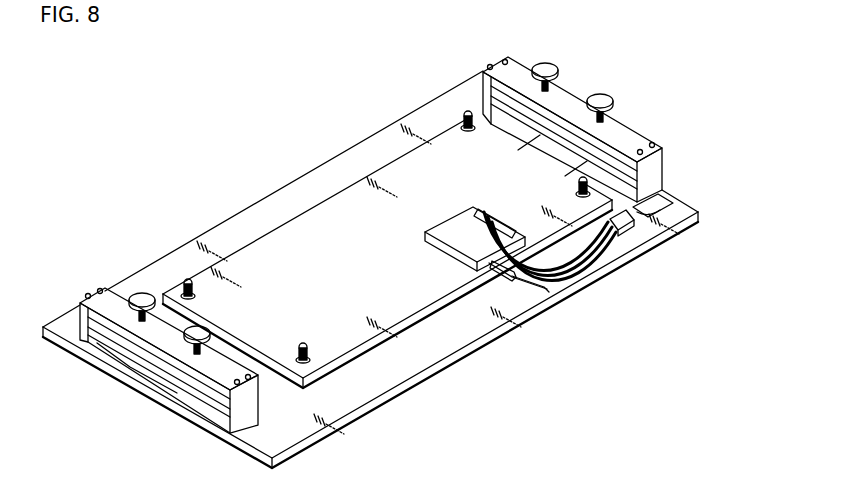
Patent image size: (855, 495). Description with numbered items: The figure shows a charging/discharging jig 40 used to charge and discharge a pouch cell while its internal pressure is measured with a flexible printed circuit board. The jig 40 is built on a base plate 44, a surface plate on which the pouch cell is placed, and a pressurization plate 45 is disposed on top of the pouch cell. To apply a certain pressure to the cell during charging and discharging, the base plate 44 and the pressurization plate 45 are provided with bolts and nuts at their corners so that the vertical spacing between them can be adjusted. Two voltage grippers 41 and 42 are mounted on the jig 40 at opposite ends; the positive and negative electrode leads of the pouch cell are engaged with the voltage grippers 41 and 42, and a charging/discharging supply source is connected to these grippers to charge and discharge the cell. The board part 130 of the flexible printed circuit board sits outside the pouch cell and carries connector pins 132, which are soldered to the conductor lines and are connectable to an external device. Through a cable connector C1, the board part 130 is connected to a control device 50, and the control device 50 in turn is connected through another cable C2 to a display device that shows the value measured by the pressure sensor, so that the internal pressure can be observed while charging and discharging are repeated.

The charging/discharging jig 40 is at (163, 251).
The voltage gripper 41 is at (655, 135).
The voltage gripper 42 is at (210, 402).
The base plate 44 is at (330, 407).
The pressurization plate 45 is at (343, 337).
The control device 50 is at (462, 243).
The board part 130 is at (633, 212).
The connector pins 132 is at (632, 220).
The cable connector C1 is at (597, 270).
The cable C2 is at (553, 291).